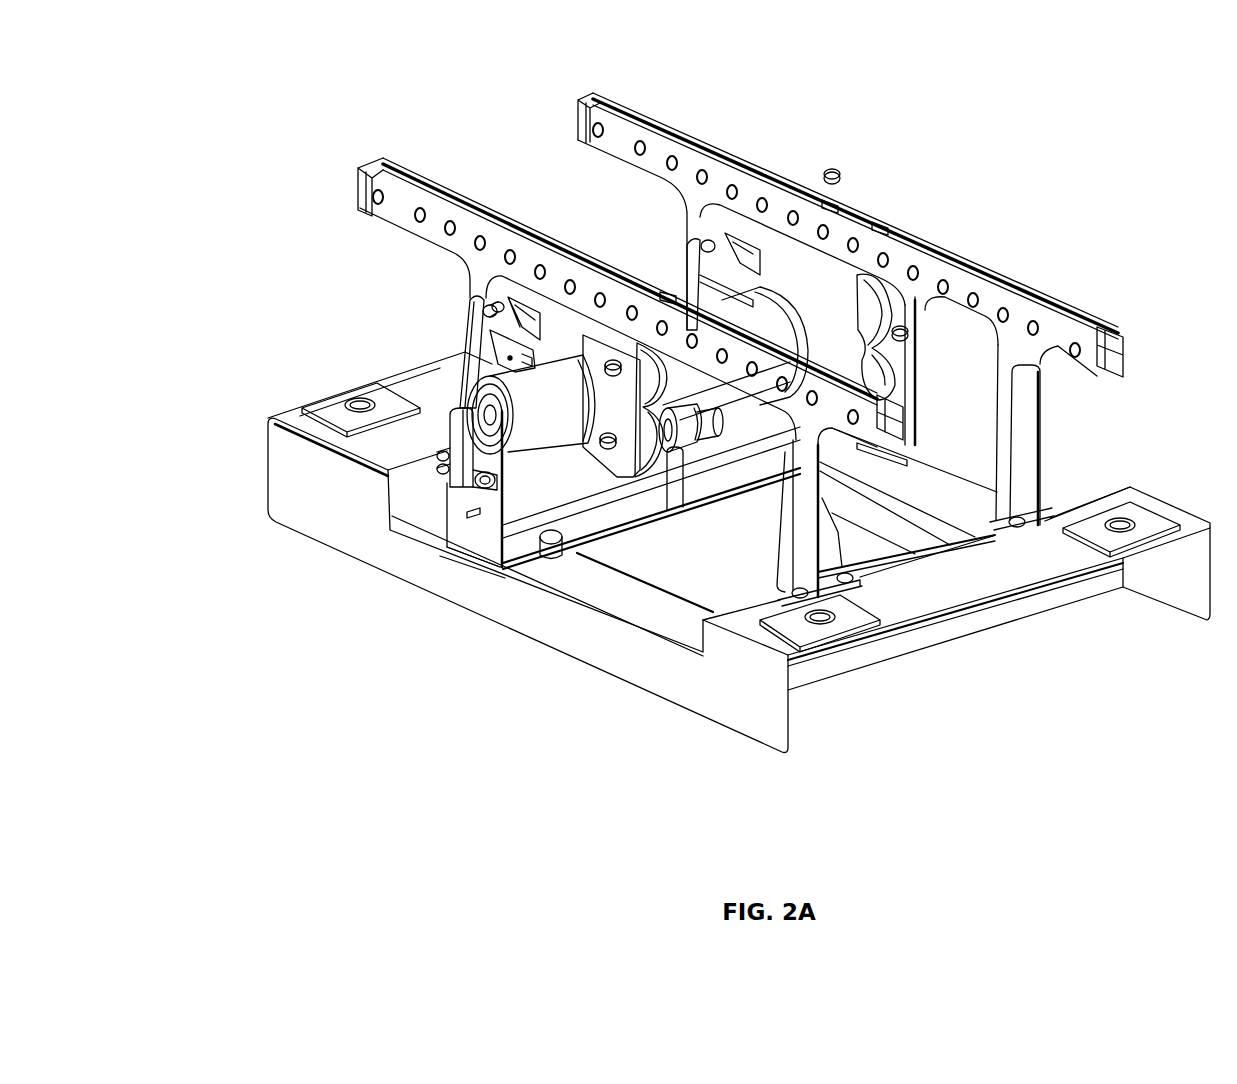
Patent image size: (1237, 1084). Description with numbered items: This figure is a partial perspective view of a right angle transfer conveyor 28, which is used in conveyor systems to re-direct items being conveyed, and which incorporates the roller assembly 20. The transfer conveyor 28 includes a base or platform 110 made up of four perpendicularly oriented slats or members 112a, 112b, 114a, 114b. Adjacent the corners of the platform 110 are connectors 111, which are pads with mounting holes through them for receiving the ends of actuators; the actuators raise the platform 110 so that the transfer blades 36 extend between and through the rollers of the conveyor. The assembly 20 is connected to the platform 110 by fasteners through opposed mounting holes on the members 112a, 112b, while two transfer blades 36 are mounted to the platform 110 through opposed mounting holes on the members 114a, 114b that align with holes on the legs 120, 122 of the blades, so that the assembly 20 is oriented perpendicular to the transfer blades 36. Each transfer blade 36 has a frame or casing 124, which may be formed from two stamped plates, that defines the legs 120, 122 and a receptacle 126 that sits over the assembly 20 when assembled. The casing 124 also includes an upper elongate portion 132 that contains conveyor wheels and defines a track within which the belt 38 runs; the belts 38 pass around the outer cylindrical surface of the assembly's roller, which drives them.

The assembly 20 is at (408, 561).
The right angle transfer conveyor 28 is at (1041, 215).
The transfer blades 36 is at (353, 190).
The belts 38 is at (473, 203).
The base or platform 110 is at (267, 478).
The connectors 111 is at (333, 410).
The slat or member 112a is at (553, 627).
The slat or member 112b is at (910, 475).
The slat or member 114a is at (925, 577).
The slat or member 114b is at (428, 384).
The leg 120 is at (805, 545).
The leg 122 is at (468, 317).
The frame or casing 124 is at (397, 217).
The receptacle 126 is at (548, 357).
The upper elongate portion 132 is at (435, 183).